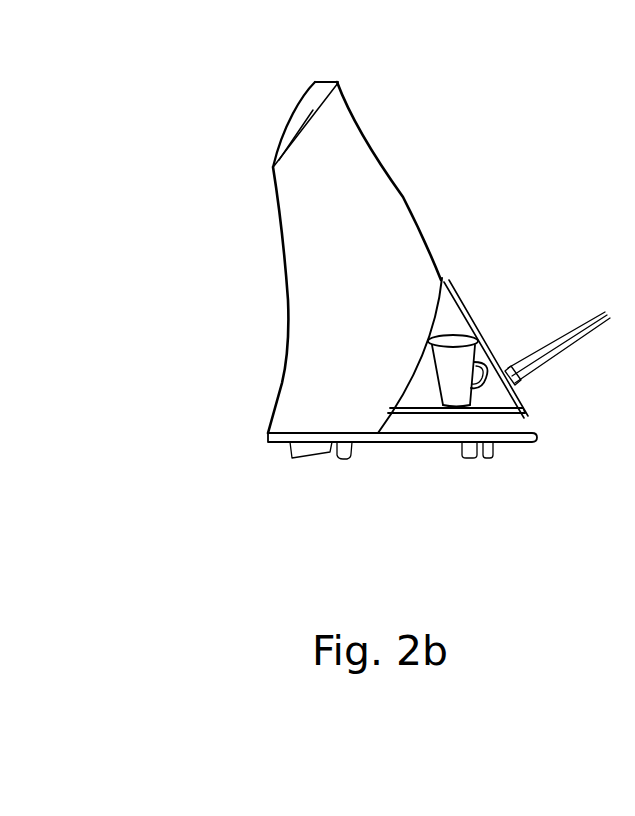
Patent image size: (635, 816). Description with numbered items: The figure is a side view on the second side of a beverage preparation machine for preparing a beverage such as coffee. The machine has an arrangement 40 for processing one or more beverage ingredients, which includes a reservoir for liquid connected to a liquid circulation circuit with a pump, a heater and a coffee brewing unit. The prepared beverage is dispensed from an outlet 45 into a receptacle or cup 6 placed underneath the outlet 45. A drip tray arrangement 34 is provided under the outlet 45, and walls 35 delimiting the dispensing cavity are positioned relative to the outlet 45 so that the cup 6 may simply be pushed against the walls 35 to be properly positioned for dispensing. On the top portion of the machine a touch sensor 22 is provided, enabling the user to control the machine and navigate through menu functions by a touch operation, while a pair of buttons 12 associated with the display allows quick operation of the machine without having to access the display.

The touch sensor 22 is at (313, 78).
The buttons 12 is at (405, 197).
The arrangement for processing beverage ingredients 40 is at (366, 295).
The outlet 45 is at (436, 320).
The cup 6 is at (456, 394).
The walls 35 is at (408, 406).
The drip tray arrangement 34 is at (500, 425).